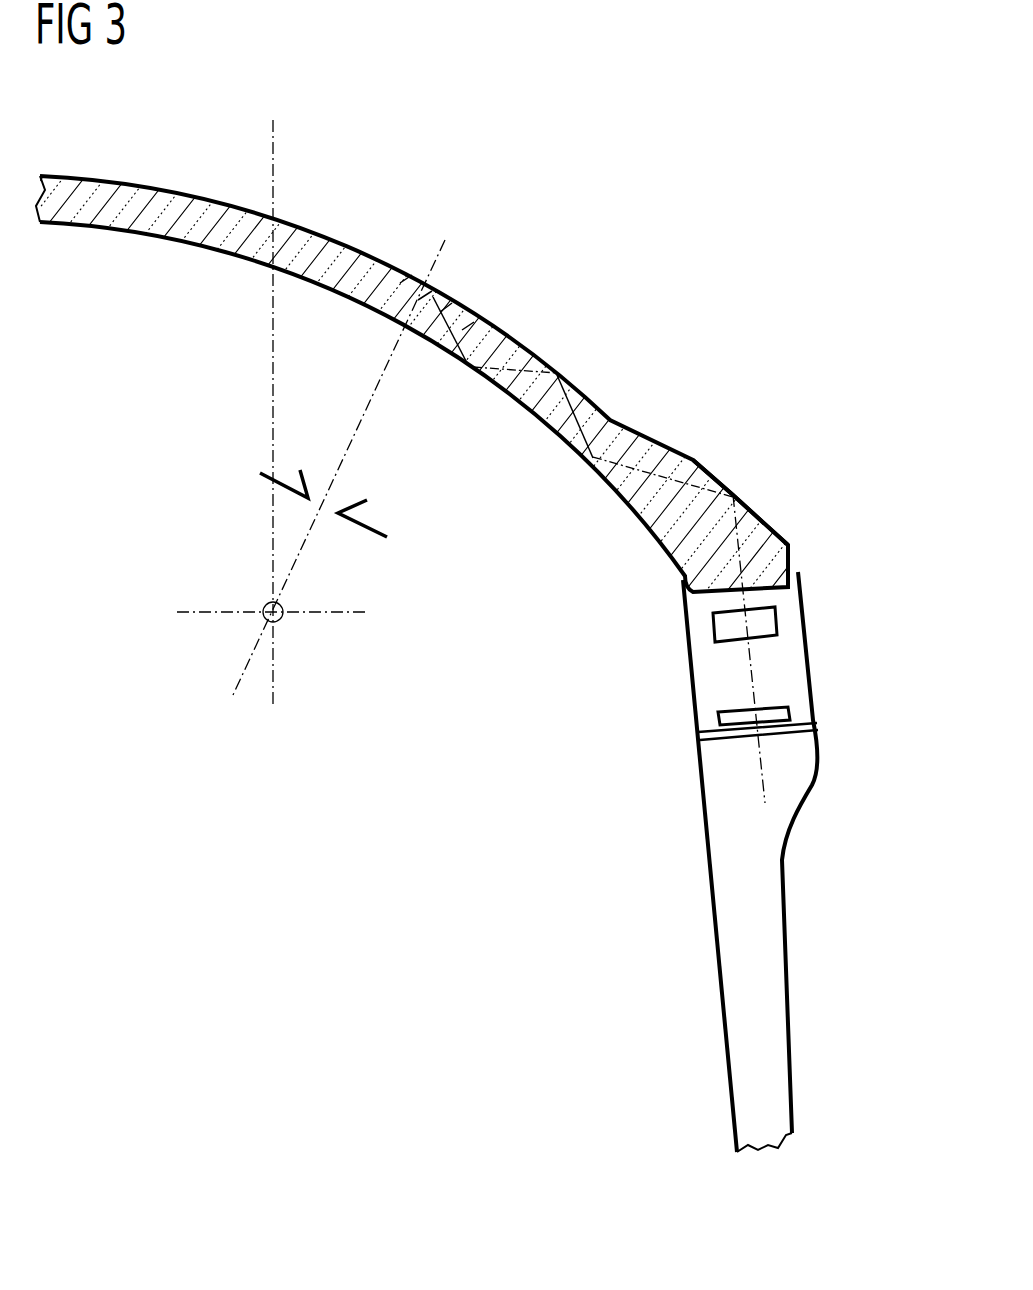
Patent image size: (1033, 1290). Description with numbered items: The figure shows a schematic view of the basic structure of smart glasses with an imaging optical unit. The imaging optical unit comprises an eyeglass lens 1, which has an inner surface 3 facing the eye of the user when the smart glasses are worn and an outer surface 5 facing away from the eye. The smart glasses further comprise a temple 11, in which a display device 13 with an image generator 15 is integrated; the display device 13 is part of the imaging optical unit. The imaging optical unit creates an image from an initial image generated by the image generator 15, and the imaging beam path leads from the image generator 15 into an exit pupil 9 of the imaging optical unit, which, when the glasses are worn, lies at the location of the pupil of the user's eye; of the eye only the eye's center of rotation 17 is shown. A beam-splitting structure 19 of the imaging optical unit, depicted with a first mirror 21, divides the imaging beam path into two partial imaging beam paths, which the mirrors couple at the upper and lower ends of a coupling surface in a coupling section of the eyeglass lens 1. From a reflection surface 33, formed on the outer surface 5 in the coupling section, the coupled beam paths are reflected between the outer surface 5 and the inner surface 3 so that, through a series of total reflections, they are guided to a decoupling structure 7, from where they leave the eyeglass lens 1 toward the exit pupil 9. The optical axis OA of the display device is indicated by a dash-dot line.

The eyeglass lens 1 is at (153, 200).
The inner surface 3 is at (508, 393).
The outer surface 5 is at (543, 360).
The decoupling structure 7 is at (390, 247).
The exit pupil 9 is at (387, 537).
The temple 11 is at (717, 970).
The display device 13 is at (751, 712).
The image generator 15 is at (780, 716).
The eye's center of rotation 17 is at (278, 620).
The beam-splitting structure 19 is at (690, 634).
The first mirror 21 is at (725, 628).
The reflection surface 33 is at (735, 494).
The optical axis OA is at (752, 668).